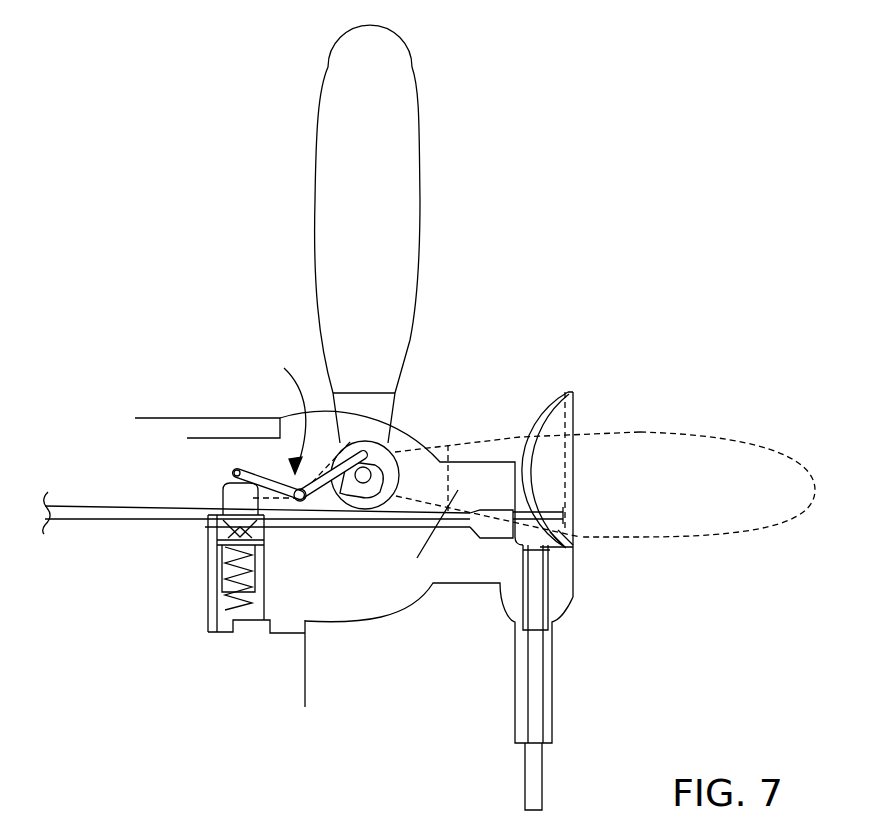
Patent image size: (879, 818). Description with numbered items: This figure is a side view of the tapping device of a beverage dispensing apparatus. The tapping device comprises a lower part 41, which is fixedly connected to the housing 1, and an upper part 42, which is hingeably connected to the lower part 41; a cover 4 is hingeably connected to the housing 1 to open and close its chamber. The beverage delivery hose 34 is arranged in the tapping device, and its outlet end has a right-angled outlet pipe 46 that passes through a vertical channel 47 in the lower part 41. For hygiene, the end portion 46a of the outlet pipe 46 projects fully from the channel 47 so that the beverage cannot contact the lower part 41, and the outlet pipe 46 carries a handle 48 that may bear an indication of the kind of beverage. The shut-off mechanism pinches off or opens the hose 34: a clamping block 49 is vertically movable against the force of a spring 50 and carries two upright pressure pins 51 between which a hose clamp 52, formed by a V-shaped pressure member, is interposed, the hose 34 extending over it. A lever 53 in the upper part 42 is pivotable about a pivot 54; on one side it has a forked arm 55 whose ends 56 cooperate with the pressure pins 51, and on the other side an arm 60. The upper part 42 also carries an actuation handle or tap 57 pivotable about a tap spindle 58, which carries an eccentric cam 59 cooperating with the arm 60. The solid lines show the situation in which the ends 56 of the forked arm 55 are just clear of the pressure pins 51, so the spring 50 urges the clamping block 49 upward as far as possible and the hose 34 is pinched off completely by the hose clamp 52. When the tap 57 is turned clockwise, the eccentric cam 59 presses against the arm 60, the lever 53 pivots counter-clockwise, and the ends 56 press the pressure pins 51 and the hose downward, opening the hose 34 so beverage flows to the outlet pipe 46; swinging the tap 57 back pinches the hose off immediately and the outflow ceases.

The housing 1 is at (308, 694).
The cover 4 is at (193, 418).
The beverage delivery hose 34 is at (72, 510).
The lower part 41 is at (375, 622).
The upper part 42 is at (412, 438).
The outlet pipe 46 is at (547, 590).
The end portion of the outlet pipe 46a is at (543, 772).
The vertical channel 47 is at (547, 686).
The handle 48 is at (574, 410).
The clamping block 49 is at (215, 553).
The spring 50 is at (233, 602).
The pressure pins 51 is at (223, 487).
The hose clamp 52 is at (223, 532).
The lever 53 is at (287, 407).
The pivot 54 is at (298, 502).
The forked arm 55 is at (268, 468).
The ends of the forked arm 56 is at (232, 471).
The actuation handle or tap 57 is at (420, 132).
The tap spindle 58 is at (388, 505).
The eccentric cam 59 is at (347, 495).
The arm 60 is at (323, 497).